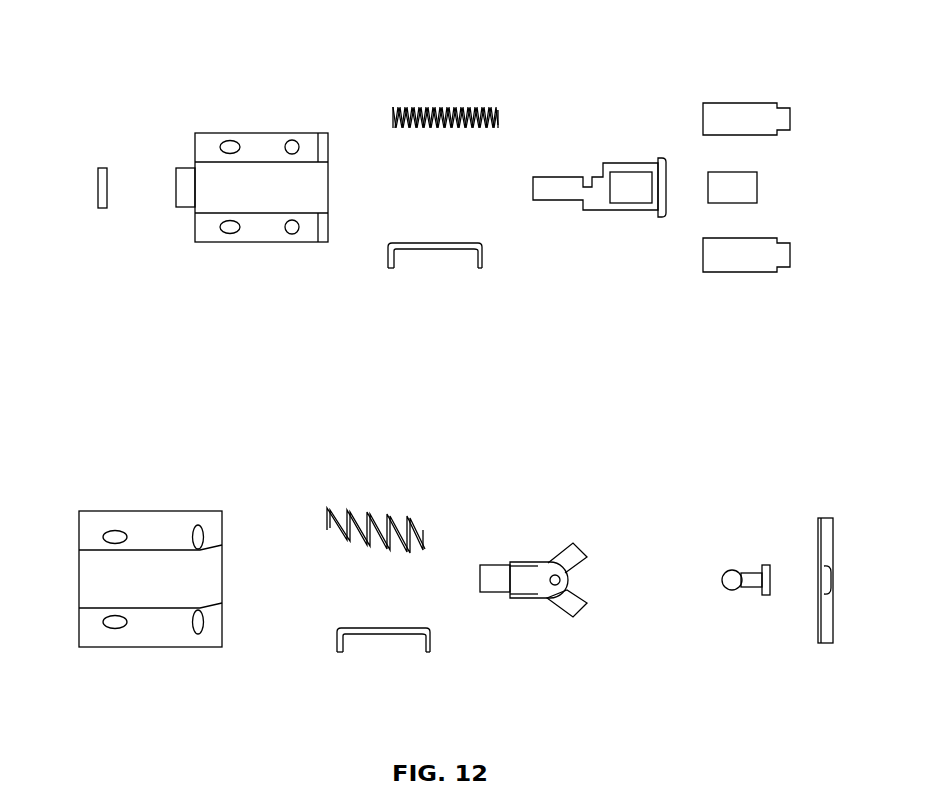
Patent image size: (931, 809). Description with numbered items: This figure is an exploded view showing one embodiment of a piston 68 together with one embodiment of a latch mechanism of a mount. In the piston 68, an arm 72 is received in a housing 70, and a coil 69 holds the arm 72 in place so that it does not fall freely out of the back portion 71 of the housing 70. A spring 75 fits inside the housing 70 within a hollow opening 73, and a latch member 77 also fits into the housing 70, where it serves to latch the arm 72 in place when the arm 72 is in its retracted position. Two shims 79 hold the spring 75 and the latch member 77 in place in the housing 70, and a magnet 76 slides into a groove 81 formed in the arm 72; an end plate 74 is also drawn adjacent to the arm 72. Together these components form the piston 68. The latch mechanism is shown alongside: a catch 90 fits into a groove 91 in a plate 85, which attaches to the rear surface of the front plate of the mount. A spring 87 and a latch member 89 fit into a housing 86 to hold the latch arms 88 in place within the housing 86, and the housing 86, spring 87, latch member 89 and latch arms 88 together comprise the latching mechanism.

The piston 68 is at (780, 72).
The coil 69 is at (100, 165).
The housing 70 is at (234, 130).
The back portion 71 is at (172, 200).
The arm 72 is at (622, 162).
The hollow opening 73 is at (320, 188).
The end plate 74 is at (662, 219).
The spring 75 is at (432, 105).
The magnet 76 is at (726, 170).
The latch member 77 is at (440, 243).
The shims 79 is at (728, 103).
The groove 81 is at (650, 177).
The plate 85 is at (820, 645).
The housing 86 is at (110, 510).
The spring 87 is at (343, 506).
The latch arms 88 is at (558, 550).
The latch member 89 is at (350, 628).
The catch 90 is at (745, 572).
The groove 91 is at (831, 580).